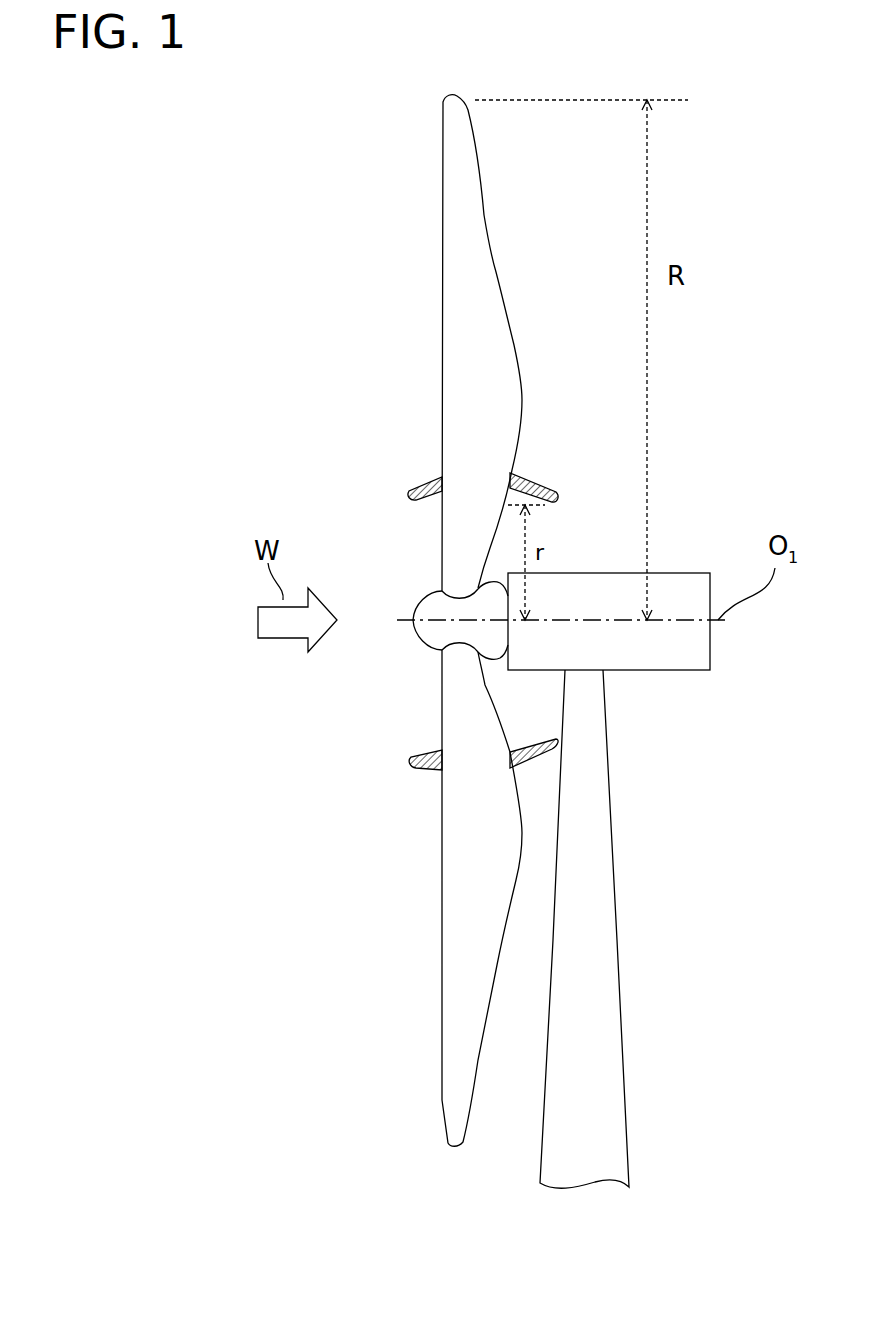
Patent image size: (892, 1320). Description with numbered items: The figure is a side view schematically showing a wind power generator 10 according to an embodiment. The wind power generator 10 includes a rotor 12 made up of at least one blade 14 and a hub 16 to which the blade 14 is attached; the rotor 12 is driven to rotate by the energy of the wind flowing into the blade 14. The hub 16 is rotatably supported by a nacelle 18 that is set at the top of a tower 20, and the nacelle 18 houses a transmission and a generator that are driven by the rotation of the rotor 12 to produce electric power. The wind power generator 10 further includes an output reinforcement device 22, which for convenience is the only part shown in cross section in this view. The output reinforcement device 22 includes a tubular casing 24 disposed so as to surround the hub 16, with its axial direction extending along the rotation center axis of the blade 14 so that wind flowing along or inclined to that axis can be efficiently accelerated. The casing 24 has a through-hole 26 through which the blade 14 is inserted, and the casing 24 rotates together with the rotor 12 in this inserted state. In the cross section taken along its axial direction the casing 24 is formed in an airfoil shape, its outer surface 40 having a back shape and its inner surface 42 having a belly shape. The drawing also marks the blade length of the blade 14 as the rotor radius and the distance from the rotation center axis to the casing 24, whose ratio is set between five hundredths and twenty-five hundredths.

The wind power generator 10 is at (734, 201).
The rotor 12 is at (399, 559).
The blade 14 is at (493, 270).
The hub 16 is at (424, 636).
The nacelle 18 is at (662, 573).
The tower 20 is at (618, 912).
The output reinforcement device 22 is at (408, 482).
The tubular casing 24 is at (545, 508).
The through-hole 26 is at (445, 482).
The outer surface 40 is at (535, 477).
The inner surface 42 is at (552, 480).